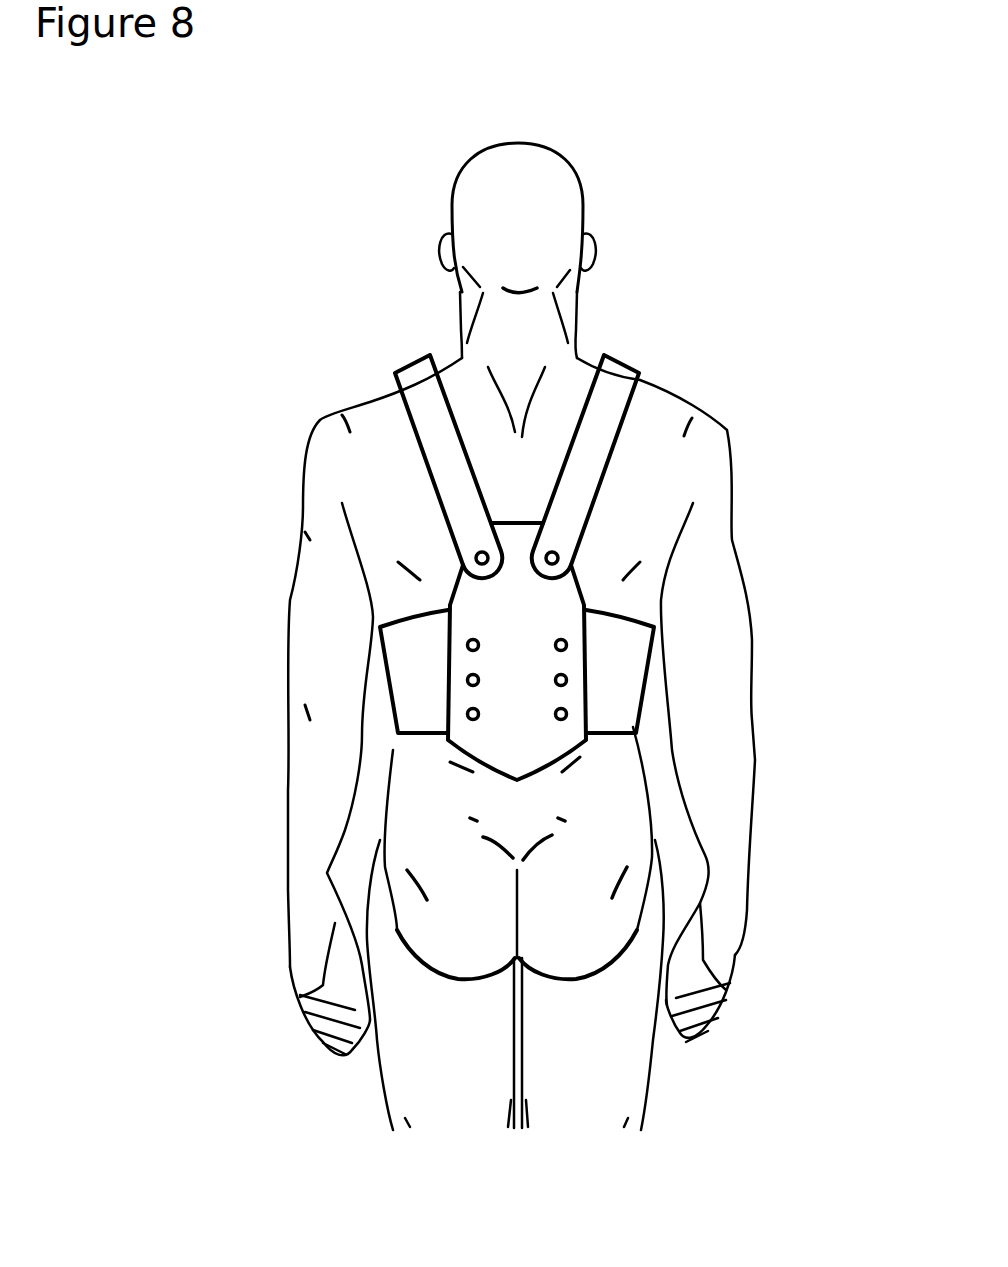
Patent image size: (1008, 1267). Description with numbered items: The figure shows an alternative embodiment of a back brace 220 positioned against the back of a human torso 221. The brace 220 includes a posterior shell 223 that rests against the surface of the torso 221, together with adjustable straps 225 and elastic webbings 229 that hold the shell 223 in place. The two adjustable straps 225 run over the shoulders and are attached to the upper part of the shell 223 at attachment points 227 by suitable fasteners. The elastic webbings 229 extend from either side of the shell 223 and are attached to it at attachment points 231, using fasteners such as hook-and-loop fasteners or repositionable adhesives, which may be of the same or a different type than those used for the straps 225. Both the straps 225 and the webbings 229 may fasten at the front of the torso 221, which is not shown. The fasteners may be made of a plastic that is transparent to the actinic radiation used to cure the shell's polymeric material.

The back brace 220 is at (522, 556).
The torso 221 is at (395, 752).
The posterior shell 223 is at (495, 665).
The adjustable straps 225 is at (428, 397).
The attachment points 227 is at (479, 549).
The elastic webbing 229 is at (410, 680).
The attachment points 231 is at (553, 714).